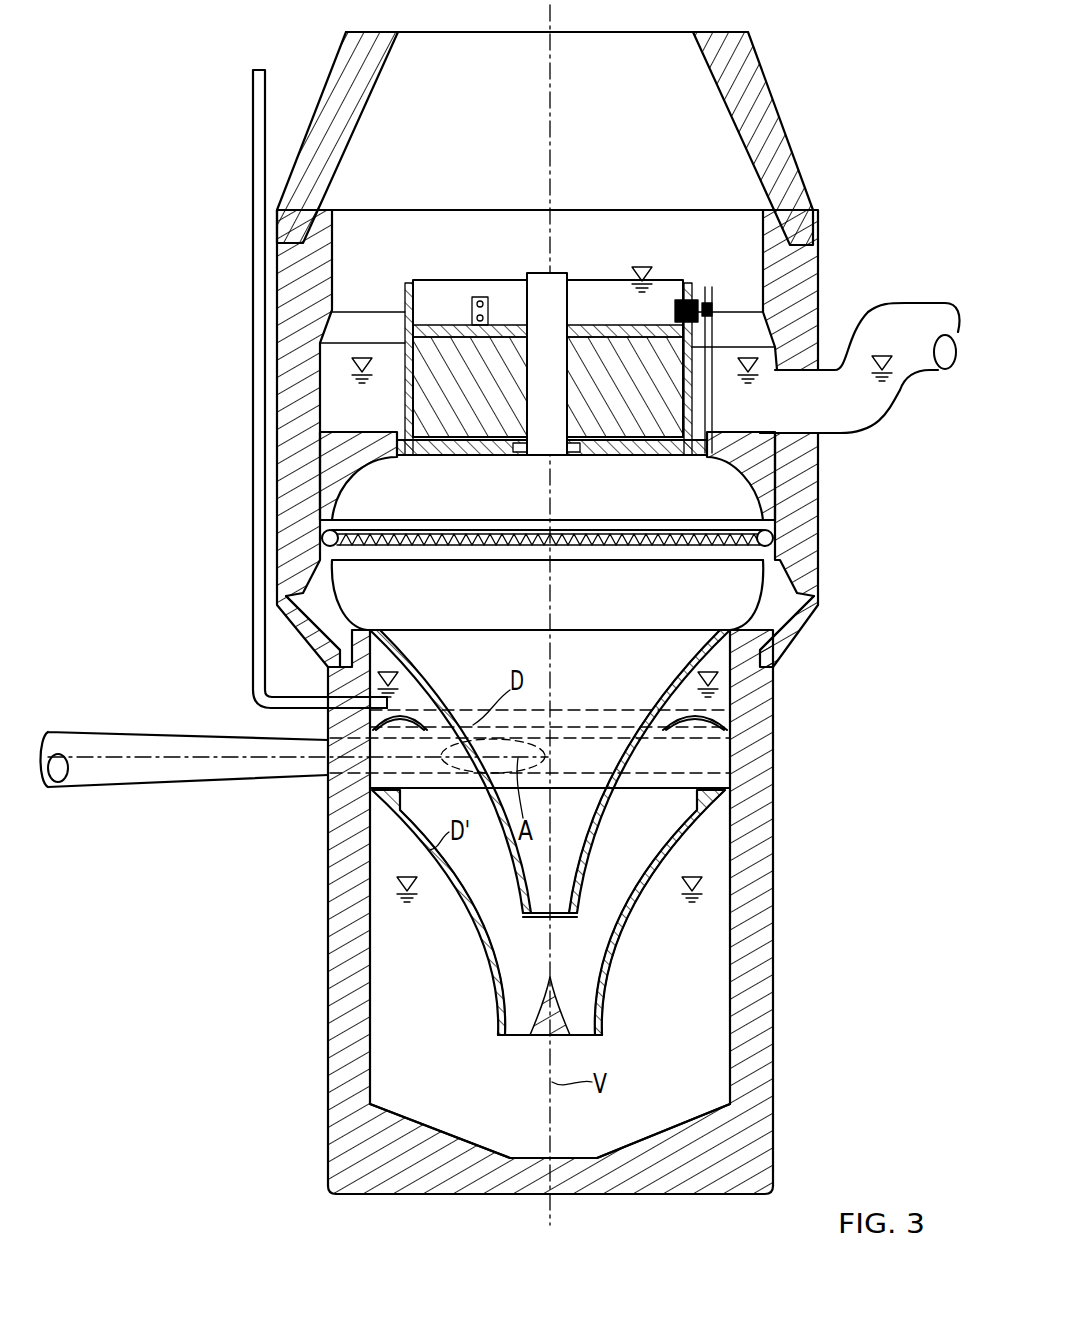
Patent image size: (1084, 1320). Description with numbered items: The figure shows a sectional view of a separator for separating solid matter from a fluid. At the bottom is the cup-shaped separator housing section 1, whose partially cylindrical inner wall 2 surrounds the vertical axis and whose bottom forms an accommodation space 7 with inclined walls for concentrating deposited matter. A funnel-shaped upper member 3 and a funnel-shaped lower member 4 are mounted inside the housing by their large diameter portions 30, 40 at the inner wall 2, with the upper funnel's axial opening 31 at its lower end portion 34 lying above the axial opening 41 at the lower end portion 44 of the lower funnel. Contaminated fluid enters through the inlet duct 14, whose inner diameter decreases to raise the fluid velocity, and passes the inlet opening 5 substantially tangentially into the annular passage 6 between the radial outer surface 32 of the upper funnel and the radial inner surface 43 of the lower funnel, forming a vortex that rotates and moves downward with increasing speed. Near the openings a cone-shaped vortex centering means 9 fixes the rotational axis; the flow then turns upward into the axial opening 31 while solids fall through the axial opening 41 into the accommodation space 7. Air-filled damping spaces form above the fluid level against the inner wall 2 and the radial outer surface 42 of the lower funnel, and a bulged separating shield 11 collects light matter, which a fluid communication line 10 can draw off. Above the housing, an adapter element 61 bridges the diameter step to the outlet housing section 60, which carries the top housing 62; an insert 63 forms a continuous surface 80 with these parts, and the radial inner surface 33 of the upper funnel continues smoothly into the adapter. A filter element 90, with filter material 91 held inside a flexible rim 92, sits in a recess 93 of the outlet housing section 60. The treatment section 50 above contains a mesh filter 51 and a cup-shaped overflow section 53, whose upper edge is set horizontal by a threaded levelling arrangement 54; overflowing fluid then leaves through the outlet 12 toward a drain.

The separator housing section 1 is at (340, 930).
The inner wall 2 is at (372, 1015).
The funnel-shaped upper member 3 is at (660, 738).
The funnel-shaped lower member 4 is at (660, 906).
The inlet opening 5 is at (523, 740).
The annular passage 6 is at (487, 920).
The accommodation space 7 is at (477, 1130).
The vortex centering means 9 is at (560, 1010).
The fluid communication line 10 is at (260, 562).
The separating shield 11 is at (433, 690).
The outlet 12 is at (860, 414).
The inlet duct 14 is at (135, 788).
The large diameter portion 30 is at (770, 663).
The axial opening 31 is at (537, 917).
The radial outer surface 32 is at (612, 830).
The radial inner surface 33 is at (583, 852).
The lower end portion 34 is at (578, 913).
The large diameter portion 40 is at (727, 802).
The axial opening 41 is at (523, 1038).
The radial outer surface 42 is at (630, 958).
The radial inner surface 43 is at (627, 958).
The lower end portion 44 is at (603, 1035).
The treatment section 50 is at (232, 297).
The mesh filter 51 is at (588, 328).
The overflow section 53 is at (412, 300).
The levelling arrangement 54 is at (478, 296).
The outlet housing section 60 is at (278, 460).
The adapter element 61 is at (310, 628).
The top housing 62 is at (758, 82).
The insert 63 is at (373, 477).
The continuous surface 80 is at (358, 597).
The filter element 90 is at (588, 528).
The filter material 91 is at (501, 548).
The rim 92 is at (737, 580).
The recess 93 is at (772, 533).